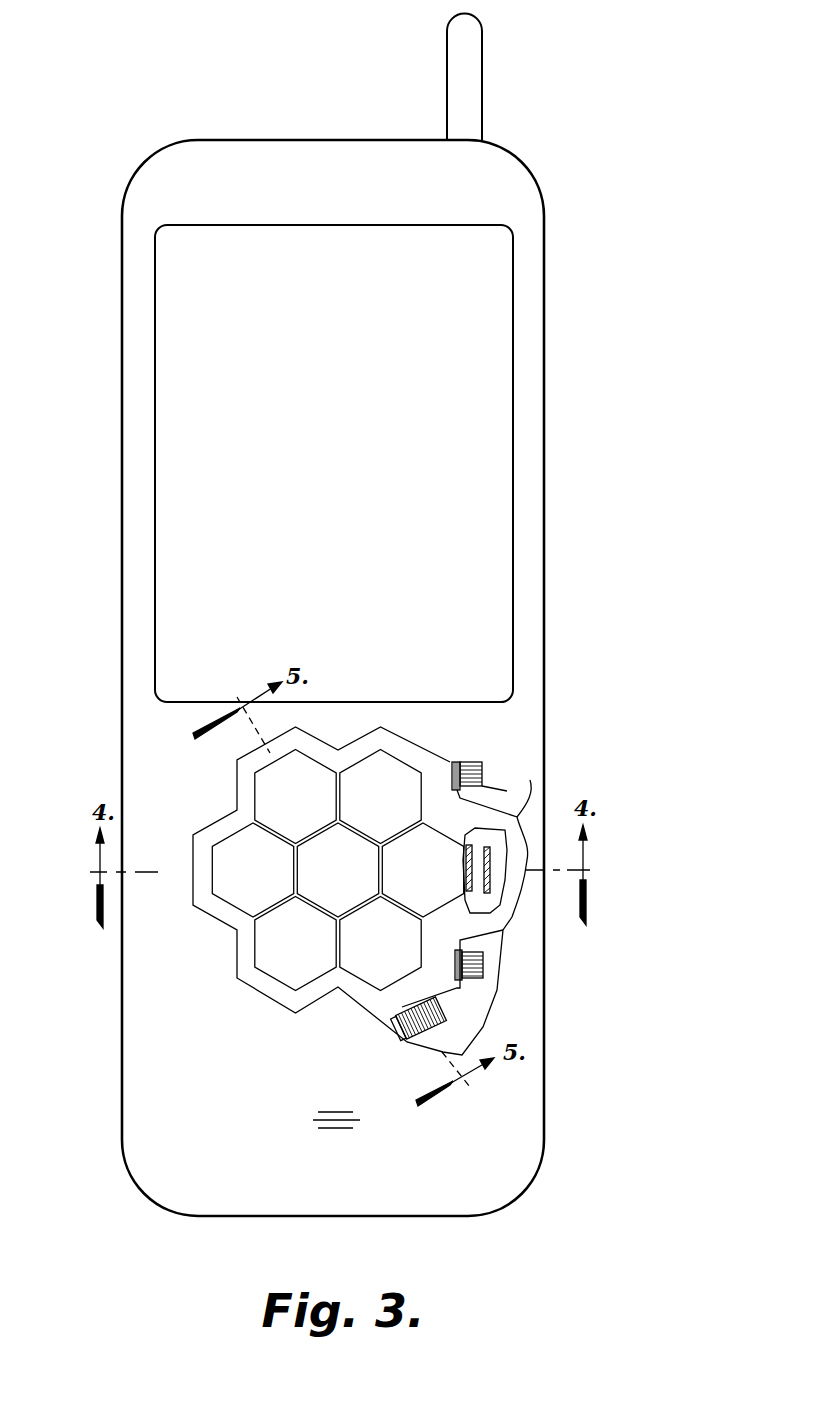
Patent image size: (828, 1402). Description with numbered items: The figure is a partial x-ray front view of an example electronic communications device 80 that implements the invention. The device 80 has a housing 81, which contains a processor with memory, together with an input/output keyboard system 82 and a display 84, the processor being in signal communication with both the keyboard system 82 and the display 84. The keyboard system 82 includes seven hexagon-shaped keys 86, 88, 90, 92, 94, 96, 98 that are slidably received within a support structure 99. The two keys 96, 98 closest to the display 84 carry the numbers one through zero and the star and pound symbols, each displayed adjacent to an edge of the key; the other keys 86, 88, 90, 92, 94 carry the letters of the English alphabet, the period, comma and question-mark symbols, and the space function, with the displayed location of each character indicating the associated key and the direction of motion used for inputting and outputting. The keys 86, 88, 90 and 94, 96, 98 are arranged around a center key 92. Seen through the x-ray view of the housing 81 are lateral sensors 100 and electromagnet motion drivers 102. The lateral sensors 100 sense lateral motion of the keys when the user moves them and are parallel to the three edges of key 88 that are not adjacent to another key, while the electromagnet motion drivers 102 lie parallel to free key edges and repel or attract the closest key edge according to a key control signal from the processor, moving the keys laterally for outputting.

The electronic communications device 80 is at (640, 1222).
The housing 81 is at (537, 189).
The input/output keyboard system 82 is at (440, 762).
The display 84 is at (470, 337).
The hexagon-shaped key 86 is at (377, 975).
The hexagon-shaped key 88 is at (422, 903).
The hexagon-shaped key 90 is at (297, 972).
The center key 92 is at (323, 867).
The hexagon-shaped key 94 is at (227, 882).
The hexagon-shaped key 96 is at (258, 780).
The hexagon-shaped key 98 is at (383, 760).
The support structure 99 is at (397, 1003).
The lateral sensors 100 is at (488, 855).
The electromagnet motion drivers 102 is at (483, 965).